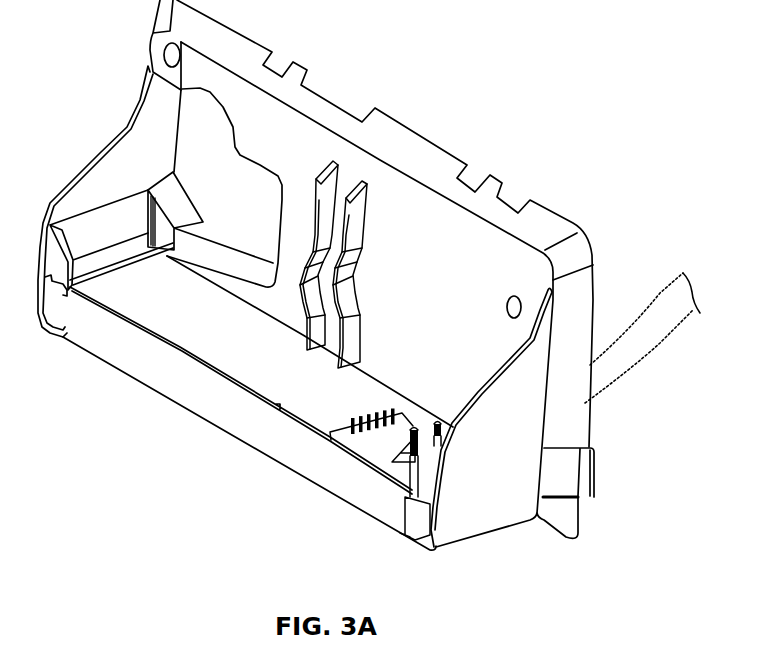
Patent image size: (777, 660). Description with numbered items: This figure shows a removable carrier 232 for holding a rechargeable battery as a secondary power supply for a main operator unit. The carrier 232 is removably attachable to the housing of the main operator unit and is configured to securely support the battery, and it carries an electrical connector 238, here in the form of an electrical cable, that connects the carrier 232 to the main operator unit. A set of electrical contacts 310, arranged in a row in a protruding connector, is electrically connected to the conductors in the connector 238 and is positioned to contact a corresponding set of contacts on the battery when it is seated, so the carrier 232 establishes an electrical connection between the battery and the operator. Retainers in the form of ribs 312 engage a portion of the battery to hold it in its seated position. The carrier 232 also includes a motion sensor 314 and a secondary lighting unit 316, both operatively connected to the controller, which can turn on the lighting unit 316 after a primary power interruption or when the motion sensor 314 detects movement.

The carrier 232 is at (400, 500).
The electrical connector 238 is at (613, 377).
The electrical contacts 310 is at (331, 431).
The ribs 312 is at (334, 176).
The motion sensor 314 is at (142, 390).
The secondary lighting unit 316 is at (220, 430).